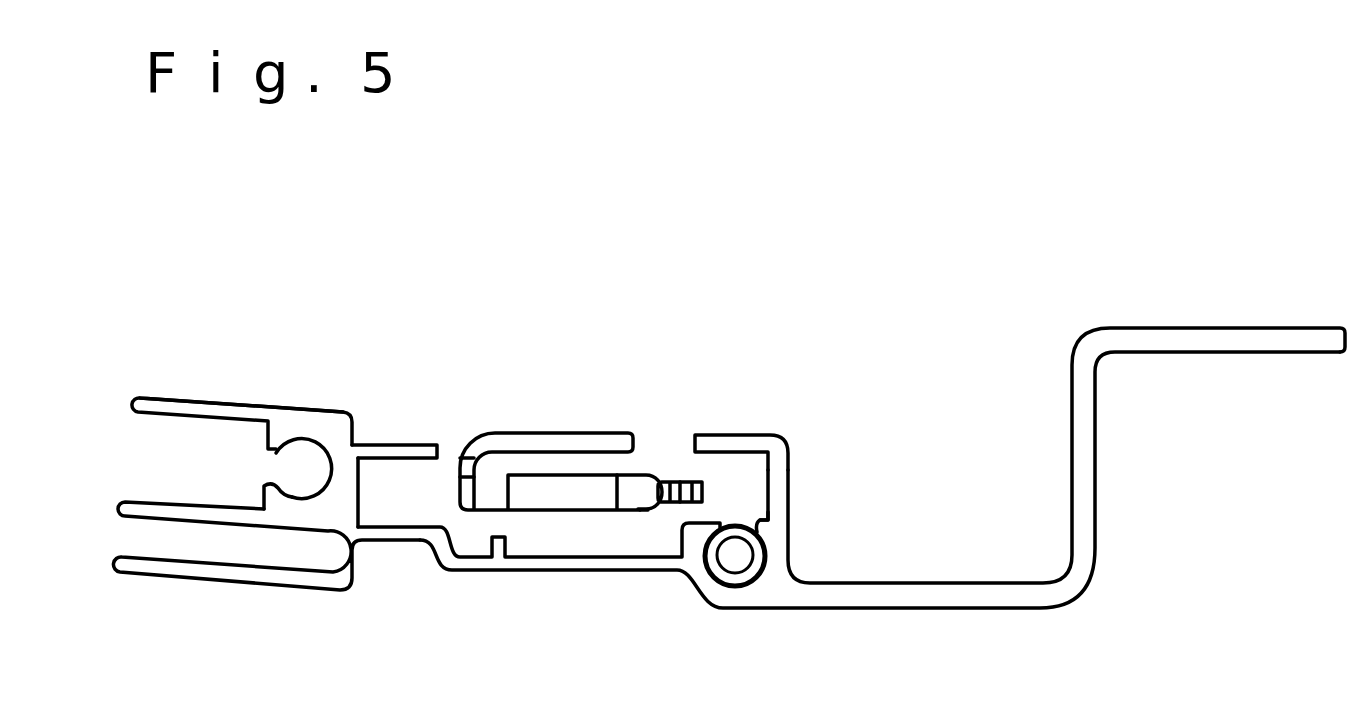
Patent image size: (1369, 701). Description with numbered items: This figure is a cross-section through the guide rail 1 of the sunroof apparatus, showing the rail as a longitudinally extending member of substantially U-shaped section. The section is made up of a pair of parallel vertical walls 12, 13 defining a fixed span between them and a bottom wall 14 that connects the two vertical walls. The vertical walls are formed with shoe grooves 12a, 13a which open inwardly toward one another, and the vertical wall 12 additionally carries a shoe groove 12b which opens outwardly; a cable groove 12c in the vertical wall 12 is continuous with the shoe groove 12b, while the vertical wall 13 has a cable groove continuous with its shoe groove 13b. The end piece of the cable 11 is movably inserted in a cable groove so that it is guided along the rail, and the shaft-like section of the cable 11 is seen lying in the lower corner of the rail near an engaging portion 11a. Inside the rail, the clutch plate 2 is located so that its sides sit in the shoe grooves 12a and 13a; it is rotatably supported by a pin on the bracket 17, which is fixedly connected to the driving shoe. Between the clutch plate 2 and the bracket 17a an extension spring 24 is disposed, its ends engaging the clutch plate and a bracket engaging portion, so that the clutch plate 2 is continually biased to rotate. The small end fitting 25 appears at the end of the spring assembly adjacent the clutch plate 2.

The guide rail 1 is at (147, 392).
The clutch plate 2 is at (682, 476).
The cable 11 is at (737, 558).
The shaft engaging portion 11a is at (767, 527).
The vertical wall 12 is at (301, 438).
The shoe groove 12a is at (412, 458).
The shoe groove 12b is at (219, 418).
The cable groove 12c is at (287, 482).
The vertical wall 13 is at (780, 477).
The shoe groove 13a is at (747, 452).
The shoe groove 13b is at (767, 553).
The bottom wall 14 is at (537, 563).
The bracket 17 is at (613, 442).
The bracket 17a is at (456, 488).
The spring 24 is at (558, 474).
The cable end fitting 25 is at (699, 481).